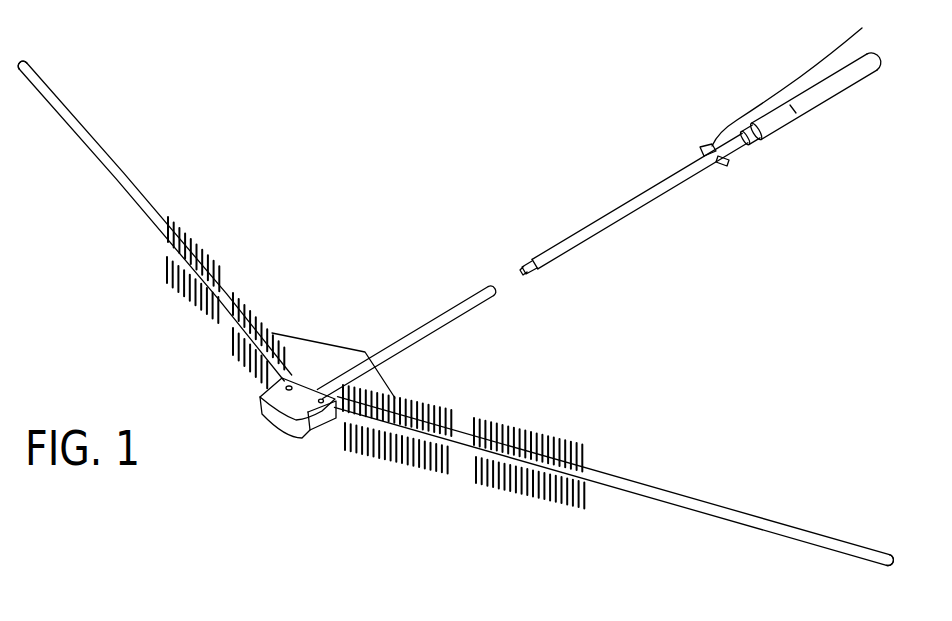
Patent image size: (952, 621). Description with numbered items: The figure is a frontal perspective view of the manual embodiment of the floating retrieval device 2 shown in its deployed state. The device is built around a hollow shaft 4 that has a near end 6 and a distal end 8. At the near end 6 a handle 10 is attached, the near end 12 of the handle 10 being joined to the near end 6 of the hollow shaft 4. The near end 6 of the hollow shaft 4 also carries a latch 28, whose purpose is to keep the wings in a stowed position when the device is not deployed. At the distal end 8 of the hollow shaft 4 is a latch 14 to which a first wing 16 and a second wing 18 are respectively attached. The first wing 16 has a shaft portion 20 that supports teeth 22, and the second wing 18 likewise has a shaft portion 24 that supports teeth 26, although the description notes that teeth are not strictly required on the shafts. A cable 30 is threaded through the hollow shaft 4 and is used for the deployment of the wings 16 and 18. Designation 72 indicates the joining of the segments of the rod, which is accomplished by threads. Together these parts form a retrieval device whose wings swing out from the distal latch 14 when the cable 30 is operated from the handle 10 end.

The floating retrieval device 2 is at (238, 434).
The hollow shaft 4 is at (623, 217).
The near end 6 is at (737, 145).
The distal end 8 is at (323, 385).
The handle 10 is at (850, 87).
The near end of handle 12 is at (792, 108).
The latch 14 is at (290, 425).
The first wing 16 is at (688, 497).
The second wing 18 is at (113, 175).
The shaft portion 20 is at (790, 543).
The teeth 22 is at (430, 400).
The shaft portion 24 is at (68, 104).
The teeth 26 is at (196, 241).
The latch 28 is at (700, 152).
The cable 30 is at (750, 105).
The joining of the segments of the rod 72 is at (487, 255).